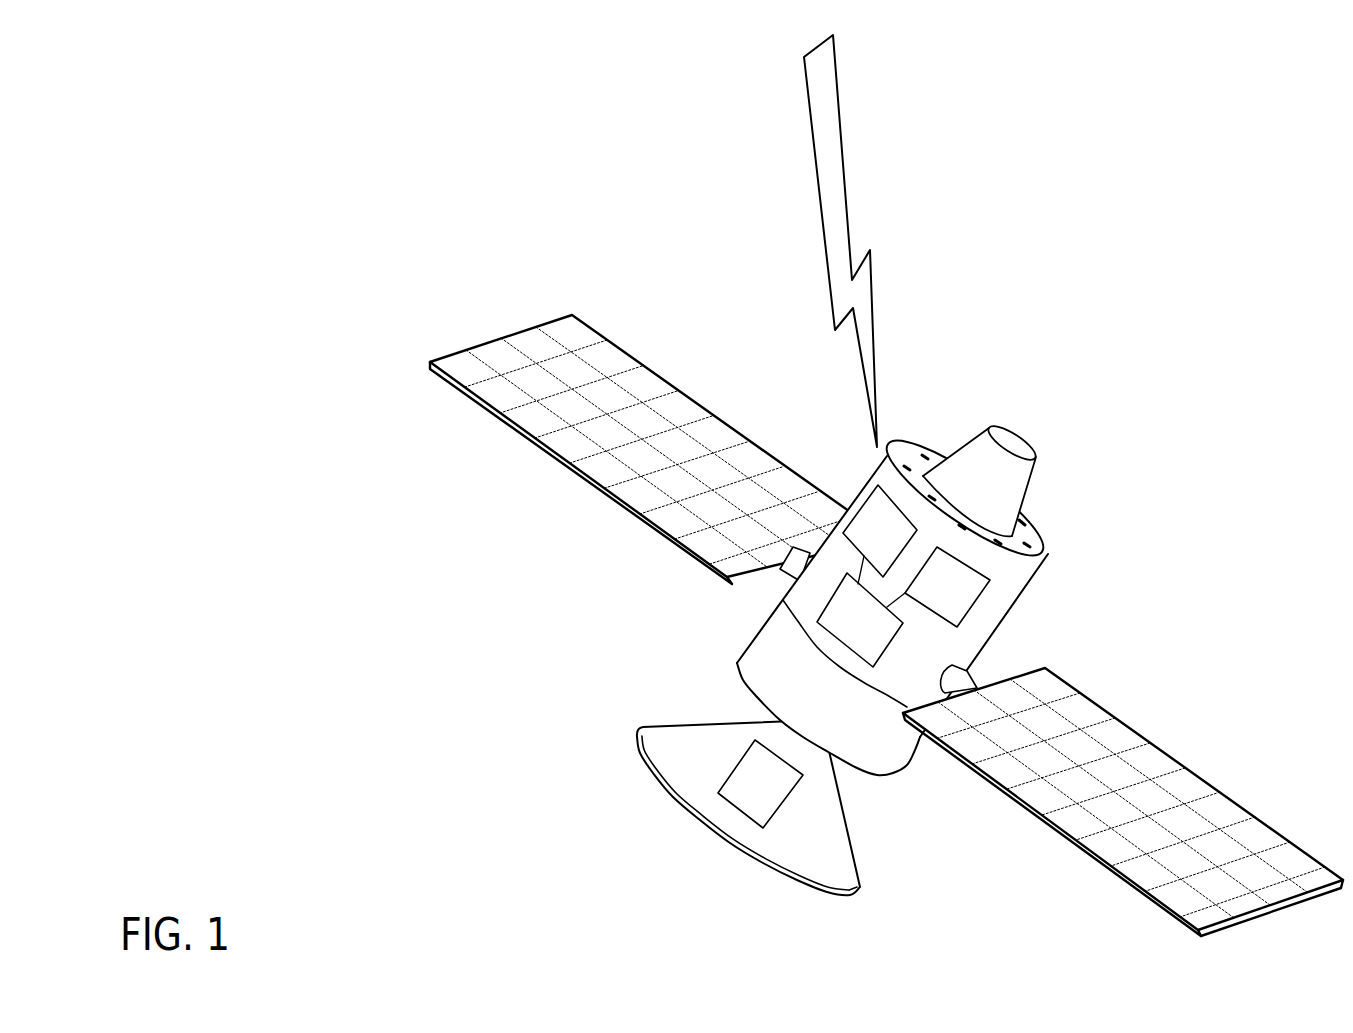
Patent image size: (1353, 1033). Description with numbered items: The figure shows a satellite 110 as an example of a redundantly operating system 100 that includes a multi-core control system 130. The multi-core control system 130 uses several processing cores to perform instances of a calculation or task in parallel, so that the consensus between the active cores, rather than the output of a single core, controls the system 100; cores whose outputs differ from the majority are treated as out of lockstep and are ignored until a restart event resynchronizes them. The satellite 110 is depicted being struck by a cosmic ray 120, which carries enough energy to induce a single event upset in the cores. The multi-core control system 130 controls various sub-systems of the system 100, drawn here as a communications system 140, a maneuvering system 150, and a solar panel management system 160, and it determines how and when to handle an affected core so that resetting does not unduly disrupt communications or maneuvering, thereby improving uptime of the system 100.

The redundantly operating system 100 is at (262, 163).
The satellite 110 is at (1132, 554).
The cosmic ray 120 is at (844, 163).
The multi-core control system 130 is at (883, 634).
The communications system 140 is at (847, 648).
The maneuvering system 150 is at (903, 548).
The solar panel management system 160 is at (926, 600).